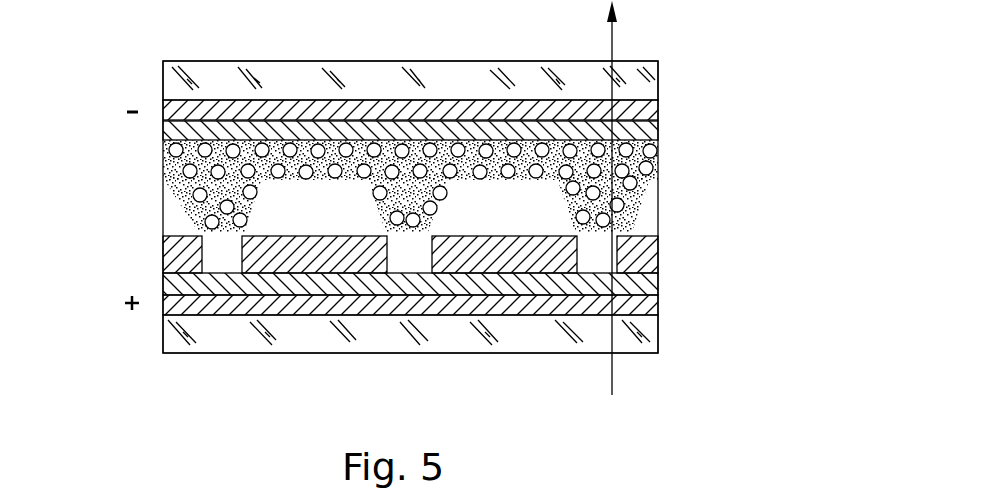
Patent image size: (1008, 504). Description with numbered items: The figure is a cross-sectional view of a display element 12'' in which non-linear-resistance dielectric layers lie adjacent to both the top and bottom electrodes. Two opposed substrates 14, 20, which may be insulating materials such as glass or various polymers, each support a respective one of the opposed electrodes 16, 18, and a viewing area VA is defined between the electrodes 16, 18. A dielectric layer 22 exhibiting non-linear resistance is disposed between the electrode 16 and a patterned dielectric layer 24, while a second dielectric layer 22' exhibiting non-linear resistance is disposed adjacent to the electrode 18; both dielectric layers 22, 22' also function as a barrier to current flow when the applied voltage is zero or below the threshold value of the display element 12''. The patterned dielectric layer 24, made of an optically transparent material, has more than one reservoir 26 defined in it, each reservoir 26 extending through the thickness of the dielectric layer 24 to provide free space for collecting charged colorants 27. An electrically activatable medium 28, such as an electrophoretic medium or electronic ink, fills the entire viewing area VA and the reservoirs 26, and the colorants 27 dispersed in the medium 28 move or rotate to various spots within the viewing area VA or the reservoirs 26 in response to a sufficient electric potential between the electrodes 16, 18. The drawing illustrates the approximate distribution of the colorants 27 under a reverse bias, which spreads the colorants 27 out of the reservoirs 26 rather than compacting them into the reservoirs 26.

The display element 12'' is at (511, 183).
The substrate 14 is at (617, 320).
The electrode 16 is at (640, 303).
The electrode 18 is at (172, 113).
The substrate 20 is at (470, 80).
The dielectric layer 22 is at (453, 267).
The dielectric layer 22' is at (351, 143).
The dielectric layer 24 is at (323, 262).
The reservoir 26 is at (577, 258).
The colorant 27 is at (193, 200).
The electrically activatable medium 28 is at (421, 200).
The viewing area VA is at (333, 216).